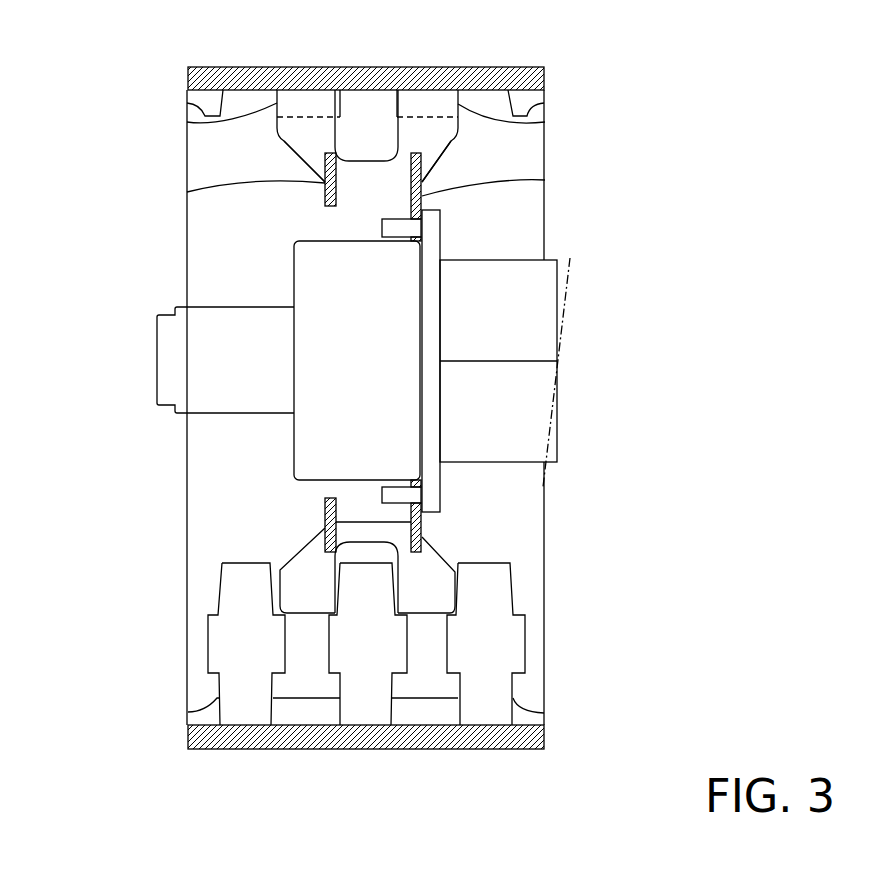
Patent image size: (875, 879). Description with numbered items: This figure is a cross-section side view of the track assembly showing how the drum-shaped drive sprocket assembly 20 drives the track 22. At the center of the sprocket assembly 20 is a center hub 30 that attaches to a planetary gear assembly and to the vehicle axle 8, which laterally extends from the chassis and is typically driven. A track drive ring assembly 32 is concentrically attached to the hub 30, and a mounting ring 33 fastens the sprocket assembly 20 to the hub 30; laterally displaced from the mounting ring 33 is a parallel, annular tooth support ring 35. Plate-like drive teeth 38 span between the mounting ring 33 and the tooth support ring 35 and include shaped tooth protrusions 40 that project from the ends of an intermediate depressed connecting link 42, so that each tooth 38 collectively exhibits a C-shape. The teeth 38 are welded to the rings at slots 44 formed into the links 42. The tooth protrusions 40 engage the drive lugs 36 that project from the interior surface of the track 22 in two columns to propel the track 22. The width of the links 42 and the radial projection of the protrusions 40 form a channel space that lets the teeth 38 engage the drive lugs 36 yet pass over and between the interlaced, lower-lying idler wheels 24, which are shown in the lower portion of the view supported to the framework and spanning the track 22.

The axle 8 is at (558, 336).
The drive sprocket assembly 20 is at (294, 280).
The track 22 is at (488, 68).
The idler wheels 24 is at (480, 697).
The center hub 30 is at (294, 438).
The track drive ring assembly 32 is at (423, 200).
The mounting ring 33 is at (425, 195).
The tooth support ring 35 is at (187, 192).
The drive lugs 36 is at (187, 122).
The drive teeth 38 is at (283, 140).
The tooth protrusions 40 is at (413, 98).
The connecting link 42 is at (378, 172).
The slots 44 is at (325, 520).